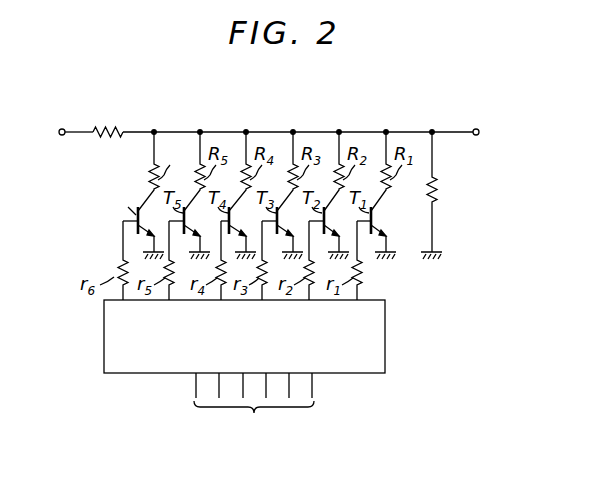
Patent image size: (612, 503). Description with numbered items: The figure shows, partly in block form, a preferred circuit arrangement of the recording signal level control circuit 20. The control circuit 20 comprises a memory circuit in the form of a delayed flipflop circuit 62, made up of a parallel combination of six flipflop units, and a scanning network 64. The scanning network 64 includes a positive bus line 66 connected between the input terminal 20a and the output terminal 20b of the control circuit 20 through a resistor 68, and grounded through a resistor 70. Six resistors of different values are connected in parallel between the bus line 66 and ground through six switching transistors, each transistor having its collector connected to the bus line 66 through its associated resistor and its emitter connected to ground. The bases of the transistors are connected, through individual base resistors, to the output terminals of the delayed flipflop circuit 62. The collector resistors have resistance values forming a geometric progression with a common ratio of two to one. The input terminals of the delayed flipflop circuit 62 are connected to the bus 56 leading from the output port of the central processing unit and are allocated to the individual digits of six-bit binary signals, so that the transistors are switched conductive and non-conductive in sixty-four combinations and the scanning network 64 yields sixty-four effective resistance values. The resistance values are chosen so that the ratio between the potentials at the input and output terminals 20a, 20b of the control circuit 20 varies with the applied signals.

The recording signal level control circuit 20 is at (257, 336).
The input terminal 20a is at (63, 129).
The output terminal 20b is at (478, 129).
The bus 56 is at (254, 407).
The delayed flipflop circuit 62 is at (104, 333).
The scanning network 64 is at (117, 222).
The positive bus line 66 is at (370, 128).
The resistor 68 is at (120, 128).
The resistor 70 is at (447, 188).